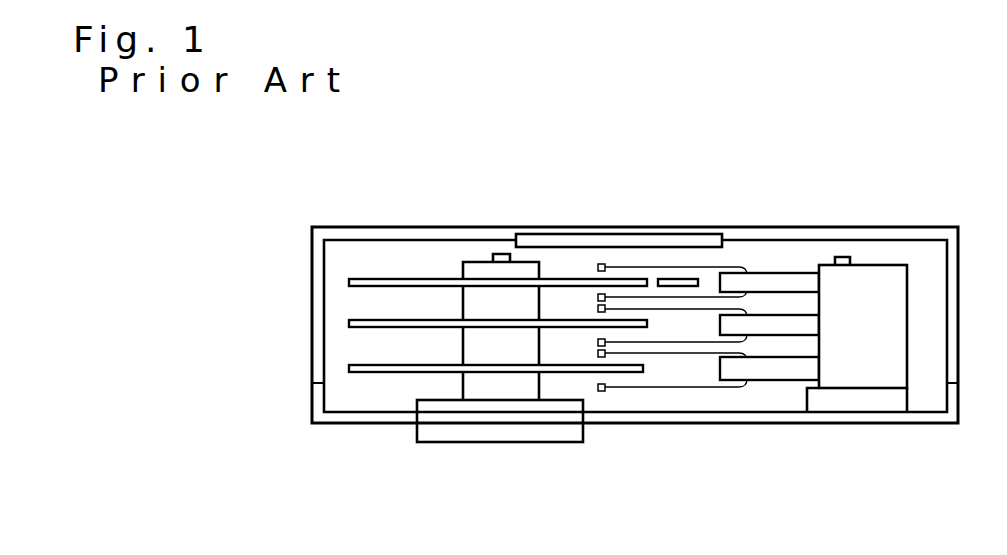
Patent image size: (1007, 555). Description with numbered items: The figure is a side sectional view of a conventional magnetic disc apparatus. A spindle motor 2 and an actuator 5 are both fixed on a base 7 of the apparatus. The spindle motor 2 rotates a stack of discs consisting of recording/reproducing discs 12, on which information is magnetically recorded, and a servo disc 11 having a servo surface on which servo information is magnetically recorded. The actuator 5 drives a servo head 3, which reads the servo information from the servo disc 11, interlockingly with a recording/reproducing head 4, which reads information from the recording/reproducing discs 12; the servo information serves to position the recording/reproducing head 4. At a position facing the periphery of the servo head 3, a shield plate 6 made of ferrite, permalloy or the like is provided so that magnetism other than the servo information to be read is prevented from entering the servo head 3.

The spindle motor 2 is at (478, 262).
The servo head 3 is at (598, 264).
The recording/reproducing head 4 is at (605, 297).
The actuator 5 is at (868, 277).
The shield plate 6 is at (680, 279).
The base 7 is at (370, 424).
The servo disc 11 is at (404, 279).
The recording/reproducing discs 12 is at (373, 327).